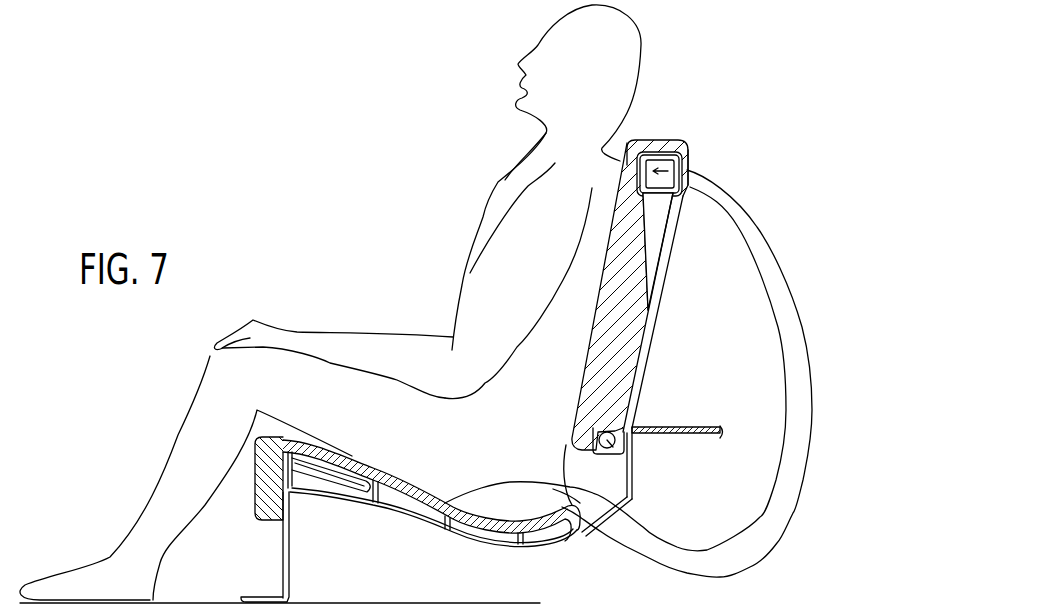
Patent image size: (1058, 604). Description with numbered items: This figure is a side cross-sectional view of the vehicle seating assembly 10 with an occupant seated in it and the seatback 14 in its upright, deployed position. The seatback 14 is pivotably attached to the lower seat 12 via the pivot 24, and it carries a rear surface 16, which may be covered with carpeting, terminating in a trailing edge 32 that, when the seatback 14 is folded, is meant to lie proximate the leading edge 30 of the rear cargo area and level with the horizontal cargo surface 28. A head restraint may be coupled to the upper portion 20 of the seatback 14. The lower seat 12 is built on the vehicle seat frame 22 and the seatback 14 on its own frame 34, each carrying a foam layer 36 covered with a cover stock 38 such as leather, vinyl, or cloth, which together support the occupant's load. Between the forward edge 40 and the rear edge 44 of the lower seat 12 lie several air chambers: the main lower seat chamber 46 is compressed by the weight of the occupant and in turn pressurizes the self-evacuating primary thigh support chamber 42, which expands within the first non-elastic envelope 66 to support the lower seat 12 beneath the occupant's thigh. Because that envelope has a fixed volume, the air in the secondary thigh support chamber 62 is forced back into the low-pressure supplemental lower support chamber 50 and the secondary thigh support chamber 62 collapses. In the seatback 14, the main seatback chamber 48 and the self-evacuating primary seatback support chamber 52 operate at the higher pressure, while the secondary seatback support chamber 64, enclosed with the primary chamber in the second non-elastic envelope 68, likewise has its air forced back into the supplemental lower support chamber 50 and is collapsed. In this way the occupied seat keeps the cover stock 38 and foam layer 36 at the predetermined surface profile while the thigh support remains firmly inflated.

The vehicle seating assembly 10 is at (703, 112).
The lower seat 12 is at (570, 530).
The seatback 14 is at (633, 242).
The rear surface 16 is at (650, 325).
The upper portion 20 is at (650, 148).
The vehicle seat frame 22 is at (417, 527).
The pivot 24 is at (617, 450).
The horizontal cargo surface 28 is at (703, 427).
The leading edge 30 is at (637, 423).
The trailing edge 32 is at (612, 457).
The frame 34 is at (657, 280).
The foam layer 36 is at (573, 403).
The cover stock 38 is at (593, 330).
The forward edge 40 is at (287, 440).
The self-evacuating primary thigh support chamber 42 is at (305, 497).
The rear edge 44 is at (605, 508).
The main lower seat chamber 46 is at (462, 530).
The main seatback chamber 48 is at (533, 537).
The supplemental lower support chamber 50 is at (397, 500).
The self-evacuating primary seatback support chamber 52 is at (624, 150).
The secondary thigh support chamber 62 is at (313, 453).
The secondary seatback support chamber 64 is at (685, 155).
The first non-elastic envelope 66 is at (350, 480).
The second non-elastic envelope 68 is at (652, 203).